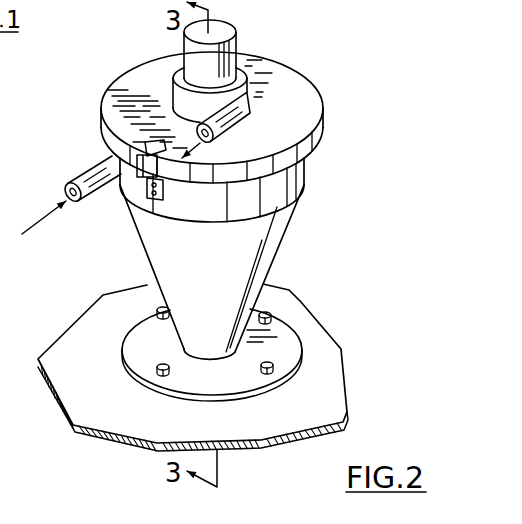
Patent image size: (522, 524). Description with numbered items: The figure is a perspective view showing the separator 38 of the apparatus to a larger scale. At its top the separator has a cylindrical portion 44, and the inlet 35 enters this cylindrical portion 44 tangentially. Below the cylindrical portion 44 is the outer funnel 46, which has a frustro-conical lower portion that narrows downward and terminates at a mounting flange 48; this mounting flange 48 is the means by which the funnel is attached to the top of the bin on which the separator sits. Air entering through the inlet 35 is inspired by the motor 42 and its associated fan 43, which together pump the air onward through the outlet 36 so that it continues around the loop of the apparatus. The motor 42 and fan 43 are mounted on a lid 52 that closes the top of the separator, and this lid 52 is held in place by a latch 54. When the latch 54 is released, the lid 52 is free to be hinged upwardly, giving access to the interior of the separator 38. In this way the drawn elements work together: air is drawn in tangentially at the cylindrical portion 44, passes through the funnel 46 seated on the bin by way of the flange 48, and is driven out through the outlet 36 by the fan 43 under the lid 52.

The inlet 35 is at (77, 172).
The outlet 36 is at (246, 102).
The separator 38 is at (316, 203).
The motor 42 is at (238, 36).
The fan 43 is at (242, 76).
The cylindrical portion 44 is at (302, 173).
The outer funnel 46 is at (268, 254).
The mounting flange 48 is at (286, 332).
The lid 52 is at (308, 124).
The latch 54 is at (137, 170).